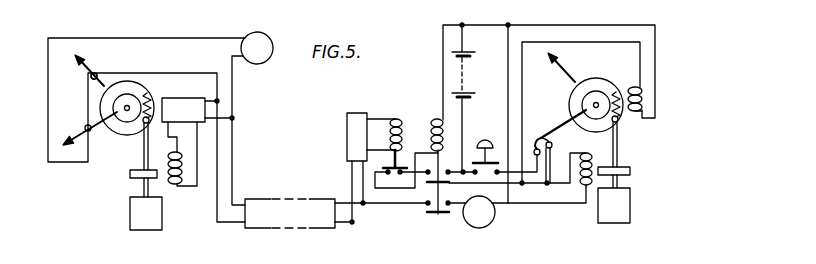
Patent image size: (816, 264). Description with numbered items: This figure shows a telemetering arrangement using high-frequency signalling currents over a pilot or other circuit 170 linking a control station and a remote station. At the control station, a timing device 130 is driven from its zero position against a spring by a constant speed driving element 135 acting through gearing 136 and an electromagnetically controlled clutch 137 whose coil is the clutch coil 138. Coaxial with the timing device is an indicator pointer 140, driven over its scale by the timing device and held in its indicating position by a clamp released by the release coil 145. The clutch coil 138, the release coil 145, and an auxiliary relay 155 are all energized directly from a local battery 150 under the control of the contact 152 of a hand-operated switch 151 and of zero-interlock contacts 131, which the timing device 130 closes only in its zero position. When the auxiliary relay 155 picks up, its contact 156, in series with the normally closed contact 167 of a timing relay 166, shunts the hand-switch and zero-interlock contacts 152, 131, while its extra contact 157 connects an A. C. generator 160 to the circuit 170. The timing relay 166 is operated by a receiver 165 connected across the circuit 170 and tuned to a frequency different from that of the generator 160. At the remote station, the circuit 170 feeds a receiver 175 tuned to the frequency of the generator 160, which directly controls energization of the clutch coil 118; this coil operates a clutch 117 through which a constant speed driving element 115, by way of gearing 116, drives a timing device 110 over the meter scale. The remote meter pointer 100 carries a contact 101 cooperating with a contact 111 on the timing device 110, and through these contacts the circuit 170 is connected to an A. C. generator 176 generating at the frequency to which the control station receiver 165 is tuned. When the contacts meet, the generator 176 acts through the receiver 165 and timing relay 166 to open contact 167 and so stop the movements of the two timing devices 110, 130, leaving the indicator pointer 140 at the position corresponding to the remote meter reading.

The remote station meter pointer 100 is at (96, 73).
The contact 101 is at (78, 89).
The timing device 110 is at (104, 131).
The contact 111 is at (88, 125).
The constant speed driving element 115 is at (140, 210).
The gearing 116 is at (145, 123).
The clutch 117 is at (131, 173).
The clutch coil 118 is at (179, 174).
The timing device 130 is at (562, 120).
The zero-interlock contacts 131 is at (543, 150).
The constant speed driving element 135 is at (625, 205).
The gearing 136 is at (618, 121).
The clutch 137 is at (637, 172).
The clutch coil 138 is at (587, 190).
The indicator pointer 140 is at (553, 75).
The release coil 145 is at (632, 113).
The local battery 150 is at (460, 72).
The hand-operated switch 151 is at (486, 140).
The contact 152 is at (488, 166).
The auxiliary relay 155 is at (435, 120).
The contact 156 is at (437, 184).
The extra contact 157 is at (446, 213).
The A. C. generator 160 is at (486, 222).
The receiver 165 is at (347, 137).
The timing relay 166 is at (390, 120).
The normally closed contact 167 is at (392, 175).
The pilot or other circuit 170 is at (297, 210).
The receiver 175 is at (192, 116).
The A. C. generator 176 is at (264, 54).